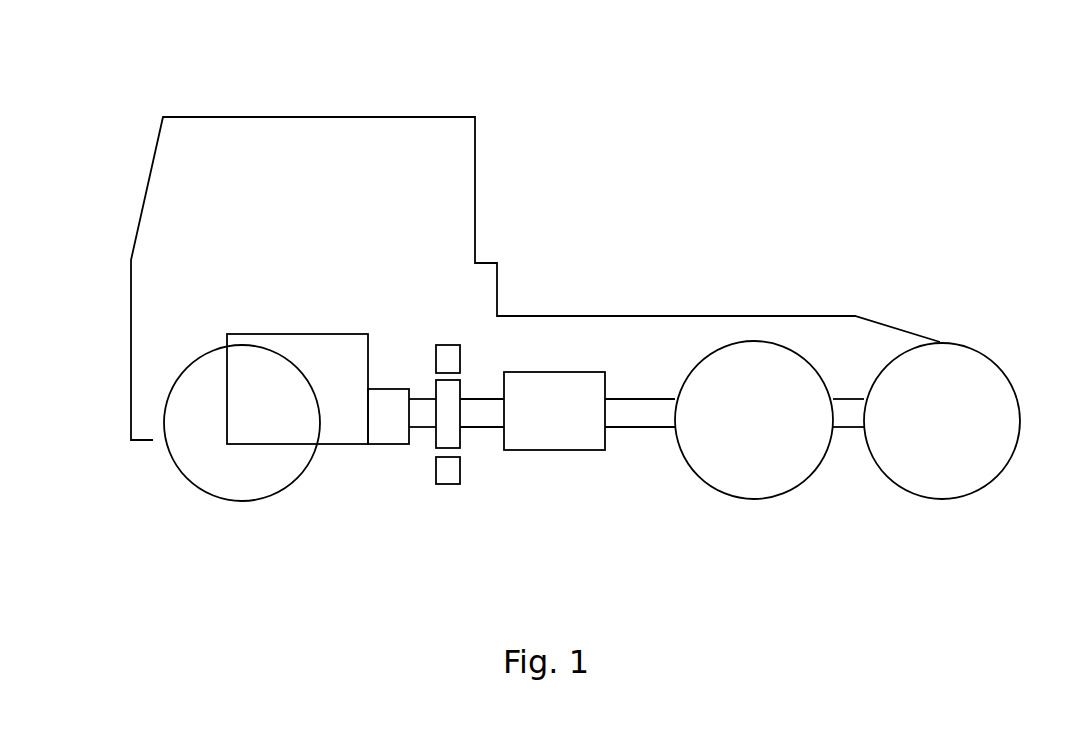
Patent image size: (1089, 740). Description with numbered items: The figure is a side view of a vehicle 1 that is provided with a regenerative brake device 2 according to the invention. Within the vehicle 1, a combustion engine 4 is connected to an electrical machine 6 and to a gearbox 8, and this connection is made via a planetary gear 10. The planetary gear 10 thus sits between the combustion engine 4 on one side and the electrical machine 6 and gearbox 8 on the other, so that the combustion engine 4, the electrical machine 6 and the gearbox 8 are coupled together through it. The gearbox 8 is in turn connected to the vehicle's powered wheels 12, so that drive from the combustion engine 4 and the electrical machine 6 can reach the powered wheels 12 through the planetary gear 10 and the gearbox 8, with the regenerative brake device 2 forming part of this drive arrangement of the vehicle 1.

The vehicle 1 is at (580, 98).
The regenerative brake device 2 is at (451, 379).
The combustion engine 4 is at (268, 334).
The electrical machine 6 is at (460, 468).
The gearbox 8 is at (583, 450).
The planetary gear 10 is at (498, 344).
The powered wheels 12 is at (797, 487).